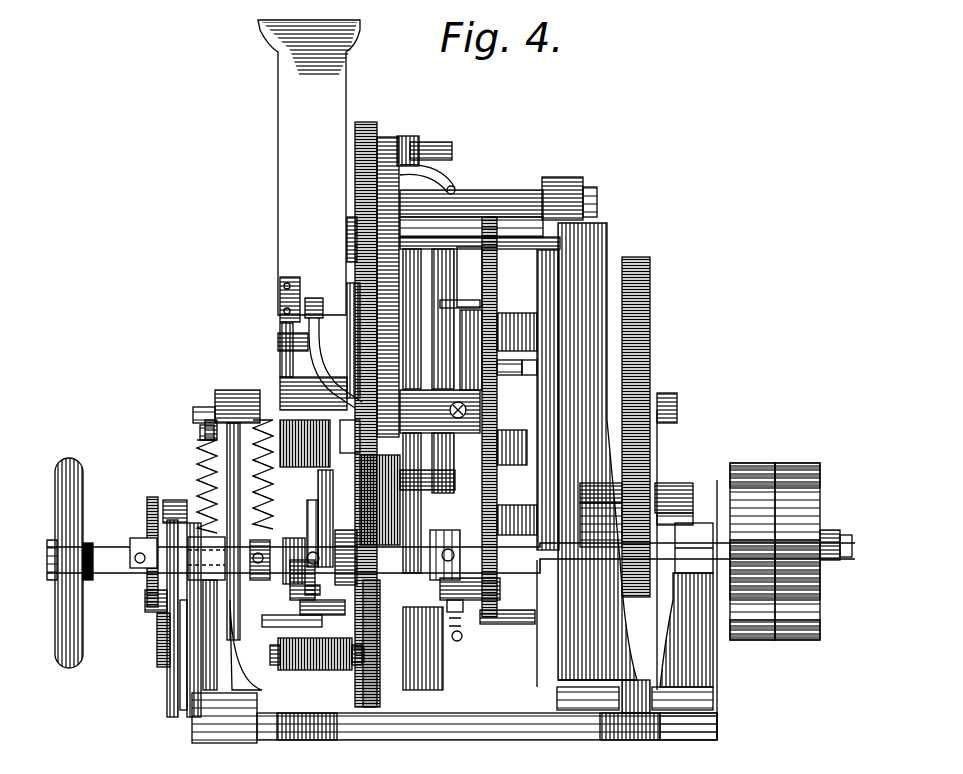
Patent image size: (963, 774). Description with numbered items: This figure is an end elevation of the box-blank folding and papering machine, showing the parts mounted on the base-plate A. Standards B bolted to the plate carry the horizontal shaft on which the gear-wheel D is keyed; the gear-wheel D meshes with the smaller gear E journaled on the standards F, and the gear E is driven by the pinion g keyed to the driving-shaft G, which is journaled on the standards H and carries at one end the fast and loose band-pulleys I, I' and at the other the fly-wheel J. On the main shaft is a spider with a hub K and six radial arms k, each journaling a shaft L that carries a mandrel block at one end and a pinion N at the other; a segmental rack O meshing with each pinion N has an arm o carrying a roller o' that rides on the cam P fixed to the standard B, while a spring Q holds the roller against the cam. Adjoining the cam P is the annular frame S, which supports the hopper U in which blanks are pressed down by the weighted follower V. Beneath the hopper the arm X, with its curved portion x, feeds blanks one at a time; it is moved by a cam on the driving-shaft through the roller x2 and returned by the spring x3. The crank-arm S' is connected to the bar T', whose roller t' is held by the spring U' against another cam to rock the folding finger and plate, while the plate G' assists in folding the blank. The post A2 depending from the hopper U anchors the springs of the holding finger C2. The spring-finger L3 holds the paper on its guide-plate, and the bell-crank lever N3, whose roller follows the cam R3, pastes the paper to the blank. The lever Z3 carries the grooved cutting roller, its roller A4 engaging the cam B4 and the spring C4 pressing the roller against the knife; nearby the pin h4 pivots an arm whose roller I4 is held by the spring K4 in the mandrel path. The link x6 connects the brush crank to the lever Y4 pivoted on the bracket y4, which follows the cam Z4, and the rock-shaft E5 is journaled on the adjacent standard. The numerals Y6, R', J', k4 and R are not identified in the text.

The hopper U is at (297, 167).
The annular frame S is at (377, 404).
The arm Y6 is at (452, 152).
The link x6 is at (456, 186).
The cross bar R' is at (498, 194).
The guide block J' is at (336, 239).
The arm X is at (330, 310).
The curved portion x is at (312, 298).
The post A2 is at (278, 342).
The finger C2 is at (283, 385).
The bar T' is at (204, 406).
The crank-arm S' is at (237, 398).
The spring U' is at (194, 431).
The coiled spring C4 is at (218, 480).
The roller t' is at (258, 474).
The coiled spring x3 is at (278, 436).
The roller x2 is at (318, 514).
The shaft L is at (469, 277).
The radial arm k is at (447, 290).
The pinion N is at (500, 232).
The segmental rack O is at (499, 300).
The gear Q is at (503, 410).
The arm o is at (509, 428).
The roller o' is at (540, 411).
The hub K is at (440, 403).
The cam P is at (418, 500).
The gear-wheel D is at (650, 300).
The gear E is at (656, 465).
The pinion g is at (662, 546).
The fast band-pulley I is at (752, 536).
The loose band-pulley I' is at (797, 536).
The driving-shaft G is at (836, 569).
The plate G' is at (451, 552).
The fly-wheel J is at (76, 563).
The cam Z4 is at (147, 520).
The rock-shaft E5 is at (150, 612).
The lever Y4 is at (158, 636).
The standard H is at (712, 655).
The bracket y4 is at (182, 682).
The lever Z3 is at (280, 605).
The roller A4 is at (300, 630).
The weighted follower V is at (246, 645).
The pin h4 is at (276, 668).
The coiled spring K4 is at (300, 670).
The cam B4 is at (330, 670).
The roller I4 is at (360, 678).
The cam R3 is at (430, 610).
The pin k4 is at (470, 640).
The standard B is at (552, 620).
The rod R is at (491, 643).
The standard F is at (662, 615).
The base-plate A is at (320, 600).
The spring-finger L3 is at (359, 365).
The bell-crank lever N3 is at (345, 414).